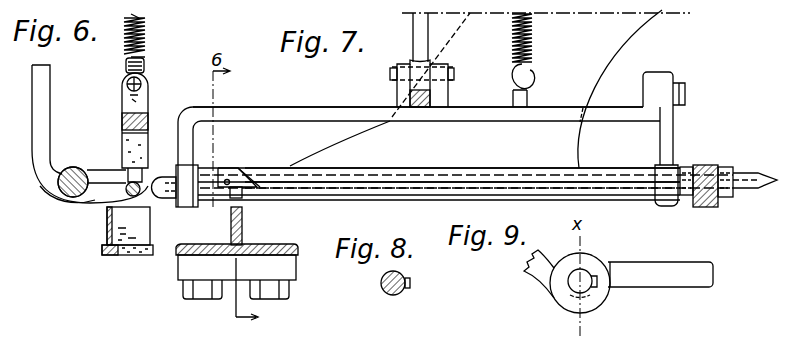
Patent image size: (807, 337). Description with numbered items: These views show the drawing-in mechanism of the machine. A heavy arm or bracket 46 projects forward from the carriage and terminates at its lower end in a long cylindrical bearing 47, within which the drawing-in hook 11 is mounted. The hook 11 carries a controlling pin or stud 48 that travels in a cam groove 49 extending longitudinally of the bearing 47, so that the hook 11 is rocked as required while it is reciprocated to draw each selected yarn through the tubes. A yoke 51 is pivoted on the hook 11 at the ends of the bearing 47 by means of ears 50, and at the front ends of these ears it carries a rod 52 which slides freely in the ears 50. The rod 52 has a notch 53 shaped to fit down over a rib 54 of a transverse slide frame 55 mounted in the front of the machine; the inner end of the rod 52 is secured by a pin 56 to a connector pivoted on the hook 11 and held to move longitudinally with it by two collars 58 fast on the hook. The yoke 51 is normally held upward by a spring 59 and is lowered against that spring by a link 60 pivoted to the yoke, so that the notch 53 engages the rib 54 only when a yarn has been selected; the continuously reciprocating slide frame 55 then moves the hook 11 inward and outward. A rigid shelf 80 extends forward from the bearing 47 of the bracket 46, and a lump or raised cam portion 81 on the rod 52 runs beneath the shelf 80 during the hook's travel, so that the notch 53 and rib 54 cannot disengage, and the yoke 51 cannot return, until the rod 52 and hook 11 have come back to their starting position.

In FIG. 6, the hook 11 is at (58, 186).
In FIG. 7, the hook 11 is at (746, 187).
In FIG. 8, the hook 11 is at (392, 295).
In FIG. 6, the arm or bracket 46 is at (42, 92).
In FIG. 7, the arm or bracket 46 is at (622, 32).
In FIG. 9, the arm or bracket 46 is at (540, 268).
In FIG. 6, the long cylindrical bearing 47 is at (70, 167).
In FIG. 7, the long cylindrical bearing 47 is at (512, 164).
In FIG. 9, the long cylindrical bearing 47 is at (597, 304).
In FIG. 8, the controlling pin or stud 48 is at (410, 284).
In FIG. 9, the cam groove 49 is at (597, 280).
In FIG. 6, the ears 50 is at (90, 201).
In FIG. 6, the yoke 51 is at (122, 117).
In FIG. 7, the yoke 51 is at (352, 108).
In FIG. 6, the rod 52 is at (127, 192).
In FIG. 7, the rod 52 is at (320, 190).
In FIG. 7, the notch 53 is at (242, 198).
In FIG. 6, the rib 54 is at (128, 226).
In FIG. 7, the rib 54 is at (231, 224).
In FIG. 6, the transverse slide frame 55 is at (108, 250).
In FIG. 7, the transverse slide frame 55 is at (178, 247).
In FIG. 7, the pin 56 is at (706, 208).
In FIG. 7, the collars 58 is at (731, 164).
In FIG. 6, the spring 59 is at (146, 36).
In FIG. 7, the spring 59 is at (533, 45).
In FIG. 6, the link 60 is at (146, 66).
In FIG. 7, the link 60 is at (413, 27).
In FIG. 6, the rigid shelf 80 is at (105, 170).
In FIG. 7, the rigid shelf 80 is at (428, 172).
In FIG. 9, the rigid shelf 80 is at (714, 276).
In FIG. 6, the lump or raised cam portion 81 is at (142, 170).
In FIG. 7, the lump or raised cam portion 81 is at (233, 168).